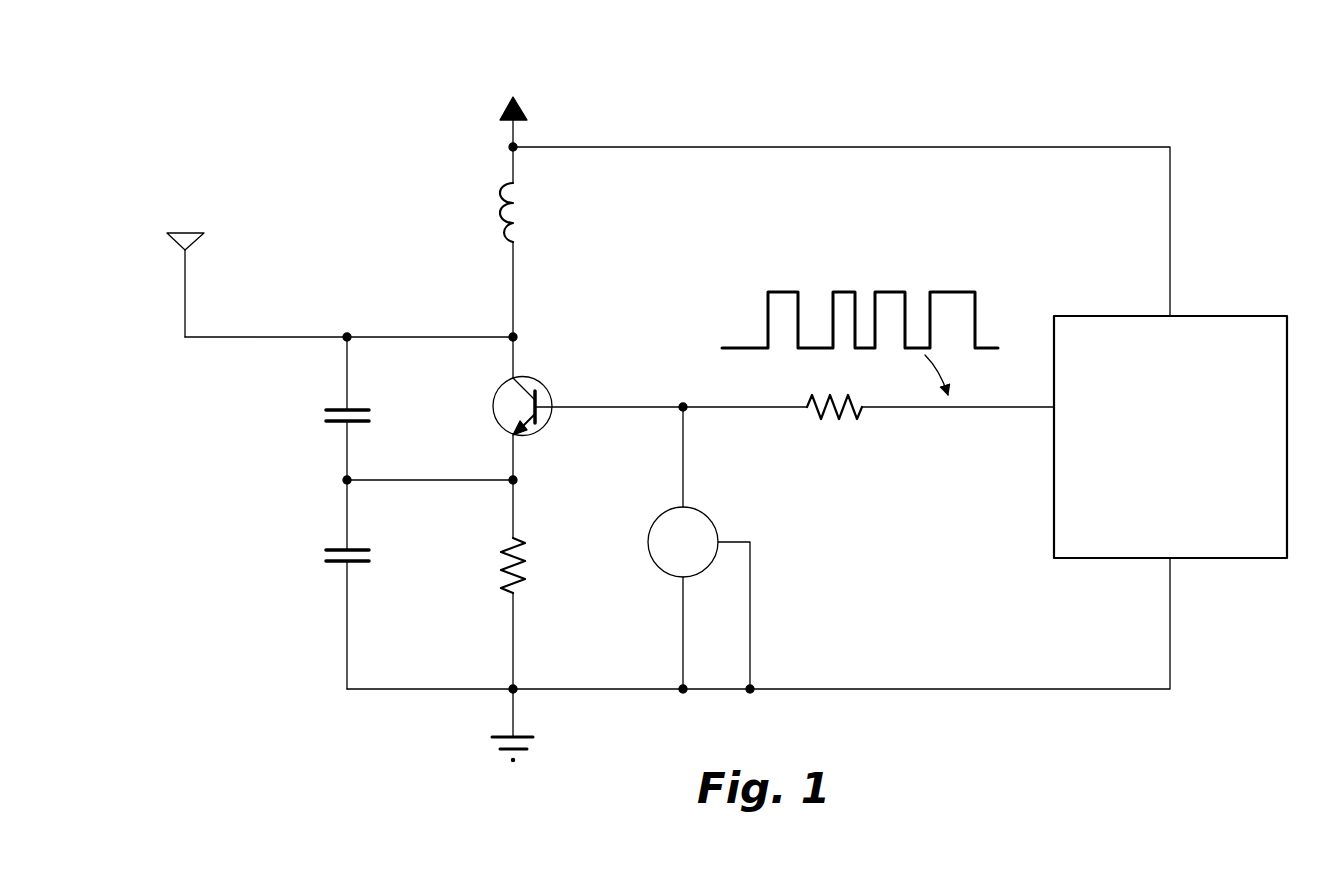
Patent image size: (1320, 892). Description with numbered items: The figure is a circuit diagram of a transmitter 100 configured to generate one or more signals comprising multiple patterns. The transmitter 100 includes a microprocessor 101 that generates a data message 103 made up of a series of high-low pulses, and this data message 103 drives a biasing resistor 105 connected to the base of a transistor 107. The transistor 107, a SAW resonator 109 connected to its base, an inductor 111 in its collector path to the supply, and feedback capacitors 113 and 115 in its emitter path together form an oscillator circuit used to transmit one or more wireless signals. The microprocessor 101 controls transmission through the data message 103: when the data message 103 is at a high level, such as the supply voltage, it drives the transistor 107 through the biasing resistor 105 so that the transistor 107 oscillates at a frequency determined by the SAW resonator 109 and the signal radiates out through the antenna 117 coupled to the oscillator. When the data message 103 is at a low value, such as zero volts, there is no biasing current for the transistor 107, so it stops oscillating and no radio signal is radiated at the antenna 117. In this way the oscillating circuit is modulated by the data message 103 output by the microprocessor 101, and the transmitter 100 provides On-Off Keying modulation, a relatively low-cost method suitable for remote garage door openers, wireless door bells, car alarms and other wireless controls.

The transmitter 100 is at (350, 121).
The microprocessor 101 is at (1225, 316).
The data message 103 is at (988, 349).
The biasing resistor 105 is at (813, 421).
The transistor 107 is at (536, 377).
The SAW resonator 109 is at (703, 512).
The inductor 111 is at (519, 218).
The feedback capacitor 113 is at (325, 415).
The feedback capacitor 115 is at (325, 558).
The antenna 117 is at (172, 236).